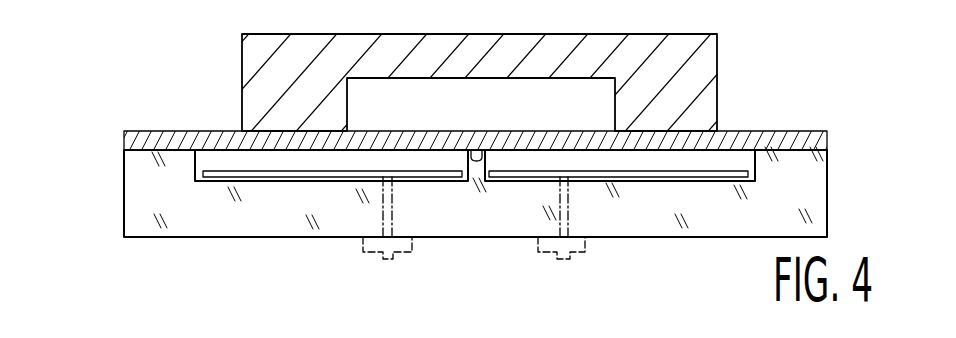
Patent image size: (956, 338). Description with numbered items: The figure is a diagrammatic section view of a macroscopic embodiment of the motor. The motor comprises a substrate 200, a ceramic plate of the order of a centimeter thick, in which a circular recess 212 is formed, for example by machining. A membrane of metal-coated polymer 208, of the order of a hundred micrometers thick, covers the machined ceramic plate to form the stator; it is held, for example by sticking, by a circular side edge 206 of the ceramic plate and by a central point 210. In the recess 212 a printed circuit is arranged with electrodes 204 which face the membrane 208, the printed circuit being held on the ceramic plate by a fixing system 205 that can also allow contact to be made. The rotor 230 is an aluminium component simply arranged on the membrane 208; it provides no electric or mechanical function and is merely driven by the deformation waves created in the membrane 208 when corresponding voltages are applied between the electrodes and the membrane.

The substrate 200 is at (143, 224).
The electrodes 204 is at (414, 172).
The fixing system 205 is at (418, 255).
The circular side edge 206 is at (148, 173).
The membrane of metal-coated polymer 208 is at (200, 138).
The central point 210 is at (473, 150).
The circular recess 212 is at (716, 158).
The rotor 230 is at (264, 32).